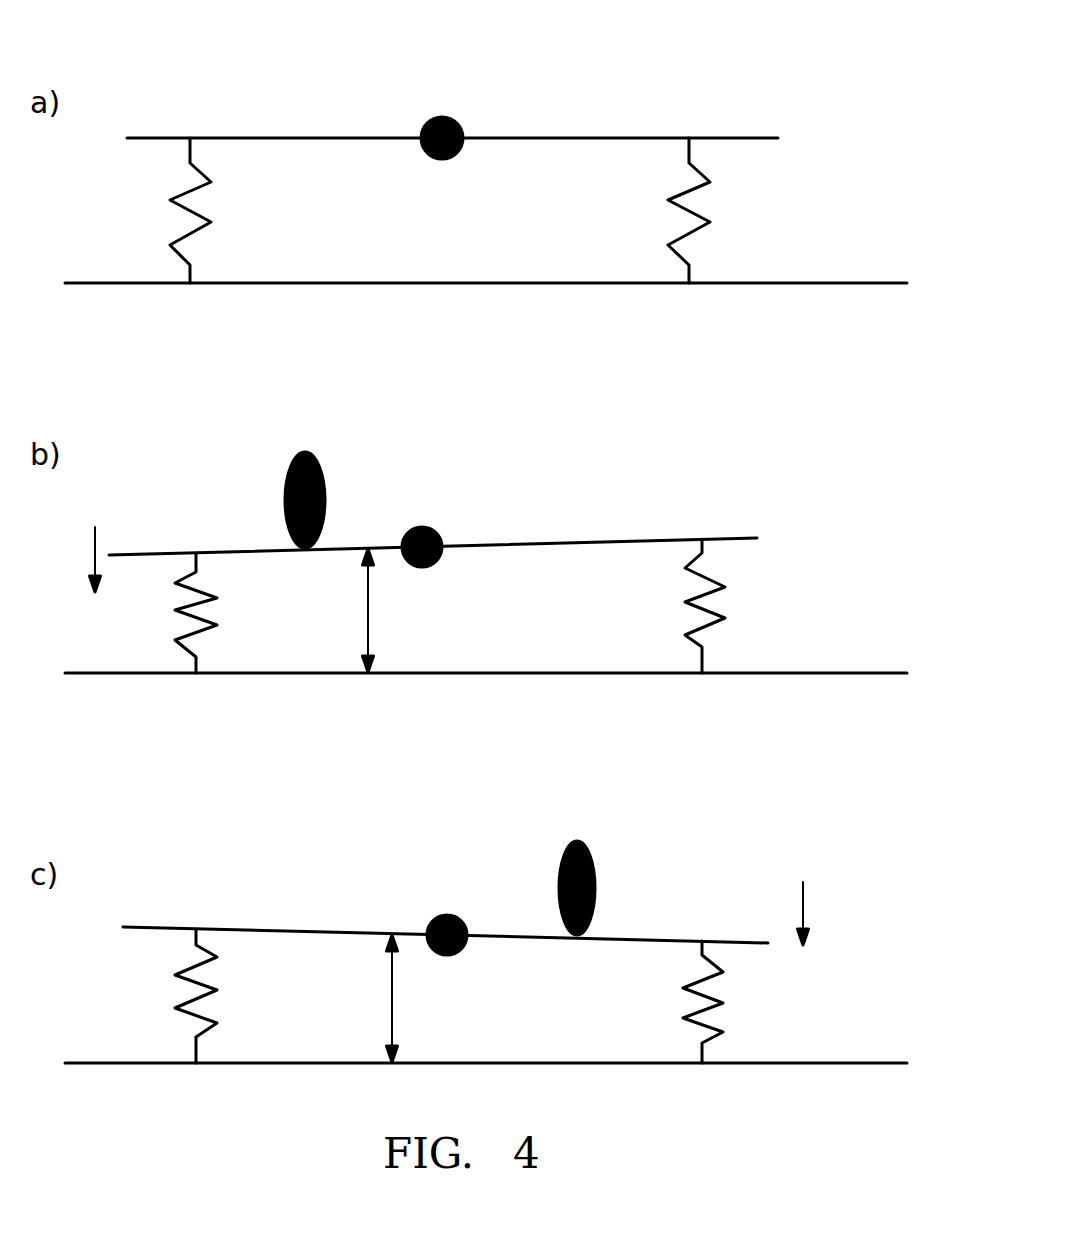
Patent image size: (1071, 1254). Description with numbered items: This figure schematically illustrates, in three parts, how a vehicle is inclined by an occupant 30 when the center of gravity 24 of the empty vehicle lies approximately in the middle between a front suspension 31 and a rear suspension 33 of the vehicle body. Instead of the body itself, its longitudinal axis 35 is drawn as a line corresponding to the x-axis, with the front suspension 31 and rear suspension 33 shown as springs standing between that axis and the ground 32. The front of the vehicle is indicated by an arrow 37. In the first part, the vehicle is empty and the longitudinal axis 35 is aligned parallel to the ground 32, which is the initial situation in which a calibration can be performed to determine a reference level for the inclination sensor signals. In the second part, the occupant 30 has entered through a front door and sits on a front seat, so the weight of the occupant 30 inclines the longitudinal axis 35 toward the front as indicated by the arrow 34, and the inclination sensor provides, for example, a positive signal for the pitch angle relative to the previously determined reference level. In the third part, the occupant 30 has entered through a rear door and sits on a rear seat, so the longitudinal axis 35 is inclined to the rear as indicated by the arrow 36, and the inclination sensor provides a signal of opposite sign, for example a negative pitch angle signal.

The center of gravity 24 is at (427, 120).
The occupant 30 is at (287, 497).
The front suspension 31 is at (178, 195).
The ground 32 is at (840, 280).
The rear suspension 33 is at (700, 210).
The arrow 34 is at (91, 543).
The longitudinal axis 35 is at (618, 138).
The arrow 36 is at (800, 898).
The arrow 37 is at (134, 118).